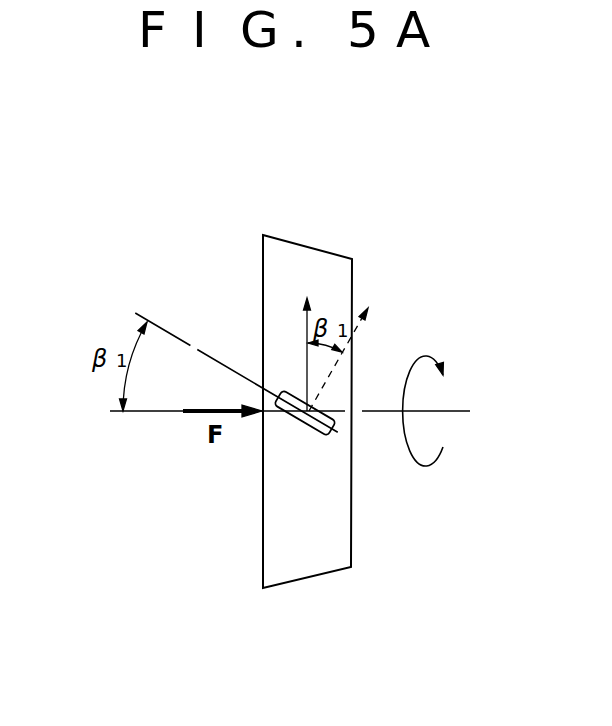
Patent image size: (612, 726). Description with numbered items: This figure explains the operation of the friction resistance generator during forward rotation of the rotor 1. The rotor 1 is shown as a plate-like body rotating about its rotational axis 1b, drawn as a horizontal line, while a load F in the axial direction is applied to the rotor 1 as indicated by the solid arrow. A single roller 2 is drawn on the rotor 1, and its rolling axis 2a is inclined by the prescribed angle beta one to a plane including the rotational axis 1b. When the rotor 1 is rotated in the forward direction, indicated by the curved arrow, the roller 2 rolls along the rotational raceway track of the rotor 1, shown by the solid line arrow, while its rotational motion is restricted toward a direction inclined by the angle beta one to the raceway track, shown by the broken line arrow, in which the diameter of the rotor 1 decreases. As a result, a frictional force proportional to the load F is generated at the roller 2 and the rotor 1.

The rotor 1 is at (306, 245).
The rotational axis 1b is at (157, 413).
The roller 2 is at (315, 430).
The rolling axis 2a is at (178, 335).